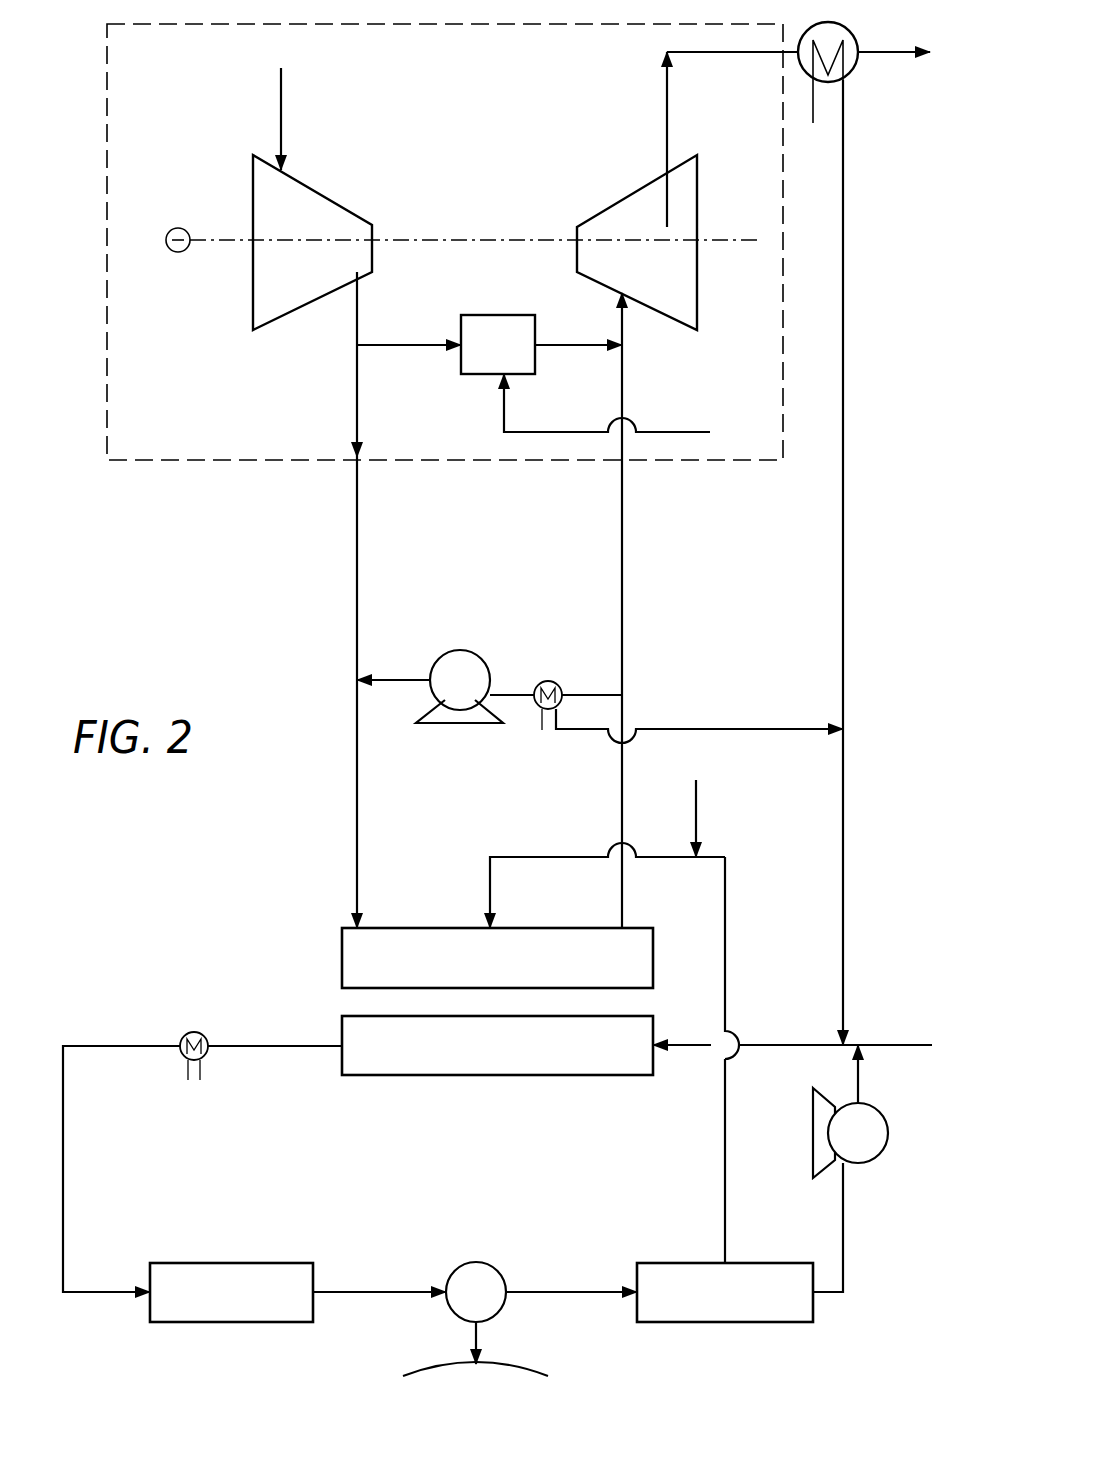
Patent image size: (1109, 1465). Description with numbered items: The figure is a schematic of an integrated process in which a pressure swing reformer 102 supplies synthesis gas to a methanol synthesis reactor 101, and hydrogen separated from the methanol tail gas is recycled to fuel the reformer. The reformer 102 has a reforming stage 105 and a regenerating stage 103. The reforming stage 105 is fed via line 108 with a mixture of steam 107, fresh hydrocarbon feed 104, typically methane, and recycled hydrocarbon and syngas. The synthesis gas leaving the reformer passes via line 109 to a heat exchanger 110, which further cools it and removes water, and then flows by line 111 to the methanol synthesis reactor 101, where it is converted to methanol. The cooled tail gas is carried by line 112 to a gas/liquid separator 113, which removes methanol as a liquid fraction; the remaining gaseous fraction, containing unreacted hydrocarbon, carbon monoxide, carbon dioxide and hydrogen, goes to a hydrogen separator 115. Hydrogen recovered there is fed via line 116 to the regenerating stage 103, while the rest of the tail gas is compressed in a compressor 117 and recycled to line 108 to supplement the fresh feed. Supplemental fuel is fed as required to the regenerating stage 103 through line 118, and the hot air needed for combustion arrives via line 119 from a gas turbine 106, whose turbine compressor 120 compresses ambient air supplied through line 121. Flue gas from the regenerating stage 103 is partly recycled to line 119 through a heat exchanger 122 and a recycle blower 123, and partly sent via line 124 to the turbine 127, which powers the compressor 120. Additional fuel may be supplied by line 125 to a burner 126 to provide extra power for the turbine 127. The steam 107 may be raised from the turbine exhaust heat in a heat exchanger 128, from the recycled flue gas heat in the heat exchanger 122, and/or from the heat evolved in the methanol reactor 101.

The methanol synthesis reactor 101 is at (231, 1292).
The pressure swing reformer 102 is at (295, 966).
The regenerating stage 103 is at (497, 958).
The fresh hydrocarbon feed 104 is at (892, 1040).
The reforming stage 105 is at (497, 1045).
The gas turbine 106 is at (445, 242).
The steam 107 is at (843, 603).
The line 108 is at (703, 1050).
The line 109 is at (253, 1043).
The heat exchanger 110 is at (194, 1032).
The line 111 is at (63, 1142).
The line 112 is at (370, 1272).
The gas/liquid separator 113 is at (520, 1319).
The hydrogen separator 115 is at (740, 1242).
The line 116 is at (725, 1170).
The compressor 117 is at (850, 1111).
The line 118 is at (698, 806).
The line 119 is at (357, 545).
The turbine compressor 120 is at (312, 242).
The line 121 is at (283, 100).
The heat exchanger 122 is at (558, 680).
The recycle blower 123 is at (460, 650).
The line 124 is at (622, 547).
The line 125 is at (667, 432).
The burner 126 is at (489, 344).
The turbine 127 is at (637, 242).
The heat exchanger 128 is at (845, 27).